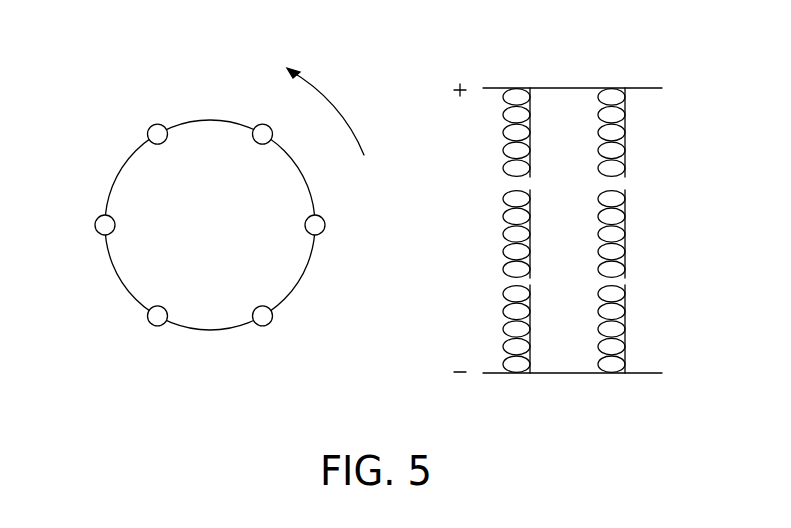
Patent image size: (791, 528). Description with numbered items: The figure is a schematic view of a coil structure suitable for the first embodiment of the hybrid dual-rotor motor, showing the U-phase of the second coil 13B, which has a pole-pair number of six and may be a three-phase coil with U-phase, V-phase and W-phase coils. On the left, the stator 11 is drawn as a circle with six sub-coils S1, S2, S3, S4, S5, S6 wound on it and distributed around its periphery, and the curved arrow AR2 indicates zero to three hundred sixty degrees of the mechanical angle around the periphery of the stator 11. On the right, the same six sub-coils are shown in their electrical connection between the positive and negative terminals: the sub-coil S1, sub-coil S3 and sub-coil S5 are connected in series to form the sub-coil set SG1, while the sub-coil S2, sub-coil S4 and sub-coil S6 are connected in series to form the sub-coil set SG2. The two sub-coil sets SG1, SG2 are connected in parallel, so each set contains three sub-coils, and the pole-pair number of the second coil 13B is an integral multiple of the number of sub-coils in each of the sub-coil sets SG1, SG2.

The second coil 13B is at (58, 38).
The stator 11 is at (136, 198).
The arrow AR2 is at (337, 111).
The sub-coil S1 is at (488, 165).
The sub-coil S2 is at (392, 132).
The sub-coil S3 is at (402, 188).
The sub-coil S4 is at (295, 234).
The sub-coil S5 is at (395, 329).
The sub-coil S6 is at (392, 329).
The sub-coil set SG1 is at (572, 217).
The sub-coil set SG2 is at (572, 74).